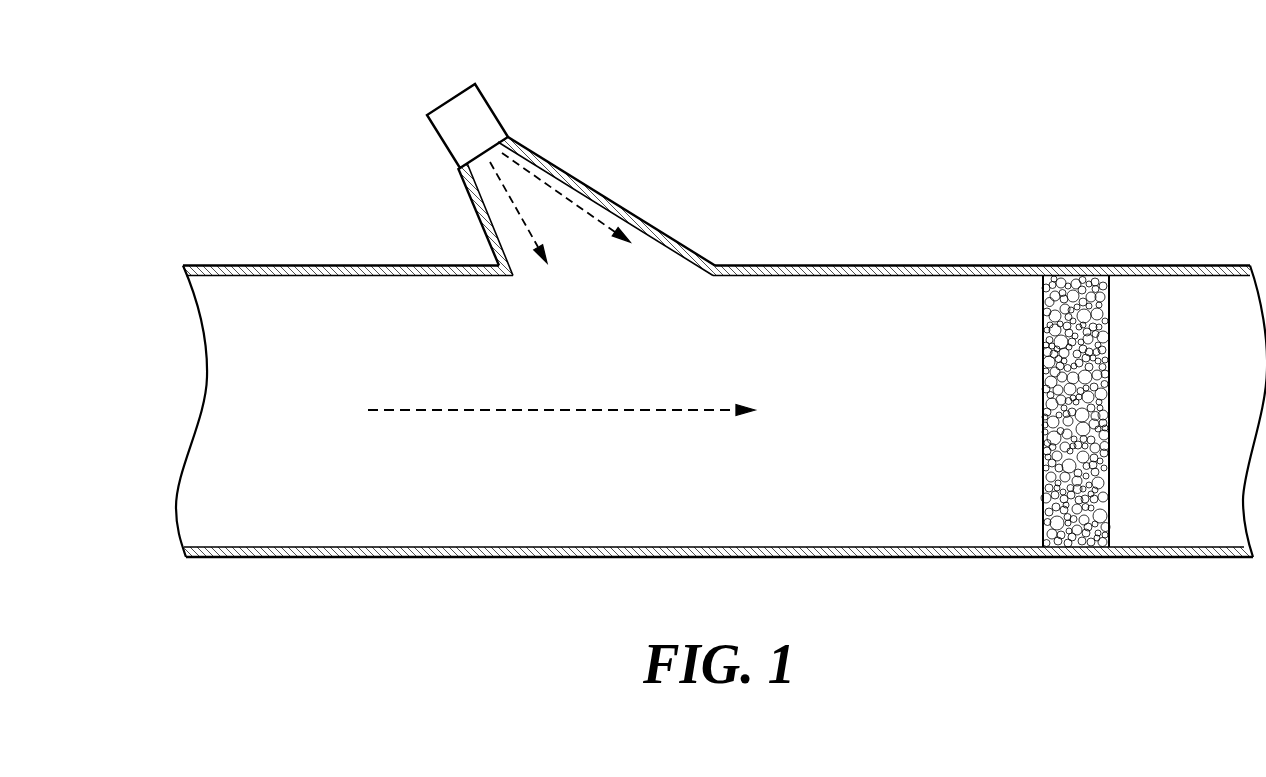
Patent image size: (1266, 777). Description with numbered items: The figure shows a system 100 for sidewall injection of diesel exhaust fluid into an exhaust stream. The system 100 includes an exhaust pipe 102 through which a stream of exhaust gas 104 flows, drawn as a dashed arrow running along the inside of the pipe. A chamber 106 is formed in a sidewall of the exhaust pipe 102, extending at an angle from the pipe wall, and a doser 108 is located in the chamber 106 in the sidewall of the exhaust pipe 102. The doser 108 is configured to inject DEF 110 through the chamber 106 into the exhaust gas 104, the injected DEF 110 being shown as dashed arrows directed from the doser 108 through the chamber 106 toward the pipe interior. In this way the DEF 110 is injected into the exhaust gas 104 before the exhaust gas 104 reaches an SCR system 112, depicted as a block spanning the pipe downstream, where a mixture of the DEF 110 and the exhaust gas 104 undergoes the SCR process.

The system 100 is at (662, 127).
The exhaust pipe 102 is at (318, 272).
The exhaust gas 104 is at (503, 411).
The chamber 106 is at (603, 196).
The doser 108 is at (490, 108).
The DEF 110 is at (555, 188).
The SCR system 112 is at (1085, 282).